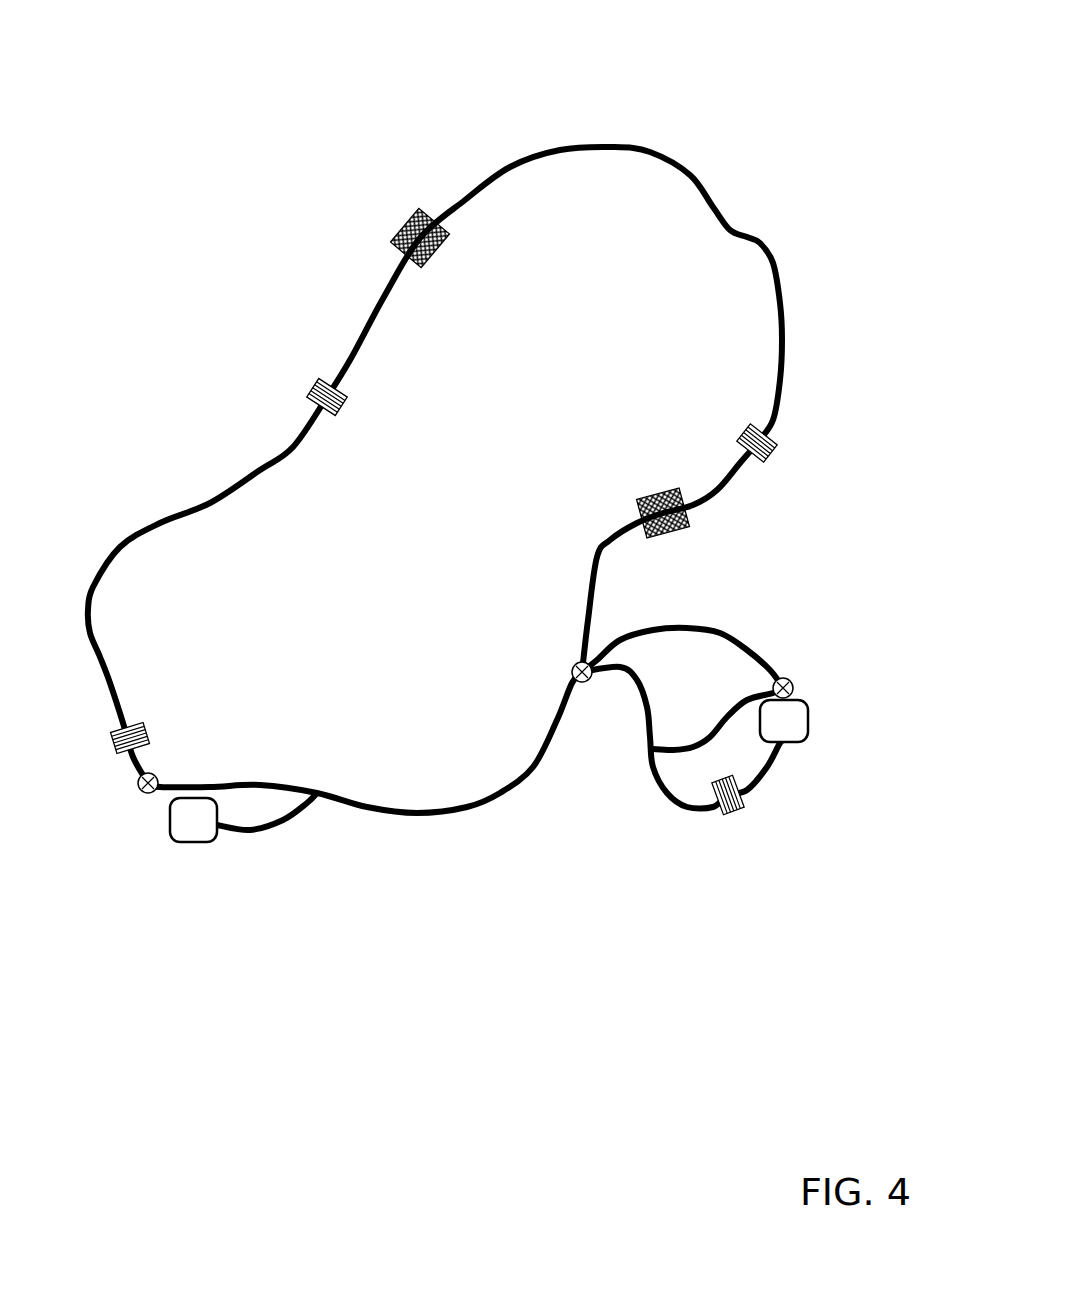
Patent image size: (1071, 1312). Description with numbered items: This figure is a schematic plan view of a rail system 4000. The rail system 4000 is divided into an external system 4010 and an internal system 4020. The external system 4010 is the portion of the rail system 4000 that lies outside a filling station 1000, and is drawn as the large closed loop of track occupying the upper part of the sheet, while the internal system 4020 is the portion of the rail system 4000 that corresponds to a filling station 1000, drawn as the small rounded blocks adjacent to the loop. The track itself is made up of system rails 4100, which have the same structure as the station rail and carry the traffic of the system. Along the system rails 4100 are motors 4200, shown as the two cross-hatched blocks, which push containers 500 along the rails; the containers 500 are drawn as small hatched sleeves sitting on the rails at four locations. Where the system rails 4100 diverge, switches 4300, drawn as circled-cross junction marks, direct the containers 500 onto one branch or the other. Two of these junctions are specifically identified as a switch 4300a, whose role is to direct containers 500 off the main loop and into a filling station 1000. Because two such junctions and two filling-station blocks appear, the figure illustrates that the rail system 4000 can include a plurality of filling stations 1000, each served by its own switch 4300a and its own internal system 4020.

The rail system 4000 is at (178, 40).
The external system 4010 is at (537, 109).
The system rails 4100 is at (287, 450).
The motors 4200 is at (653, 497).
The switches 4300 is at (570, 667).
The switch 4300a is at (787, 673).
The filling station 1000 is at (560, 803).
The internal system 4020 is at (850, 692).
The containers 500 is at (143, 737).